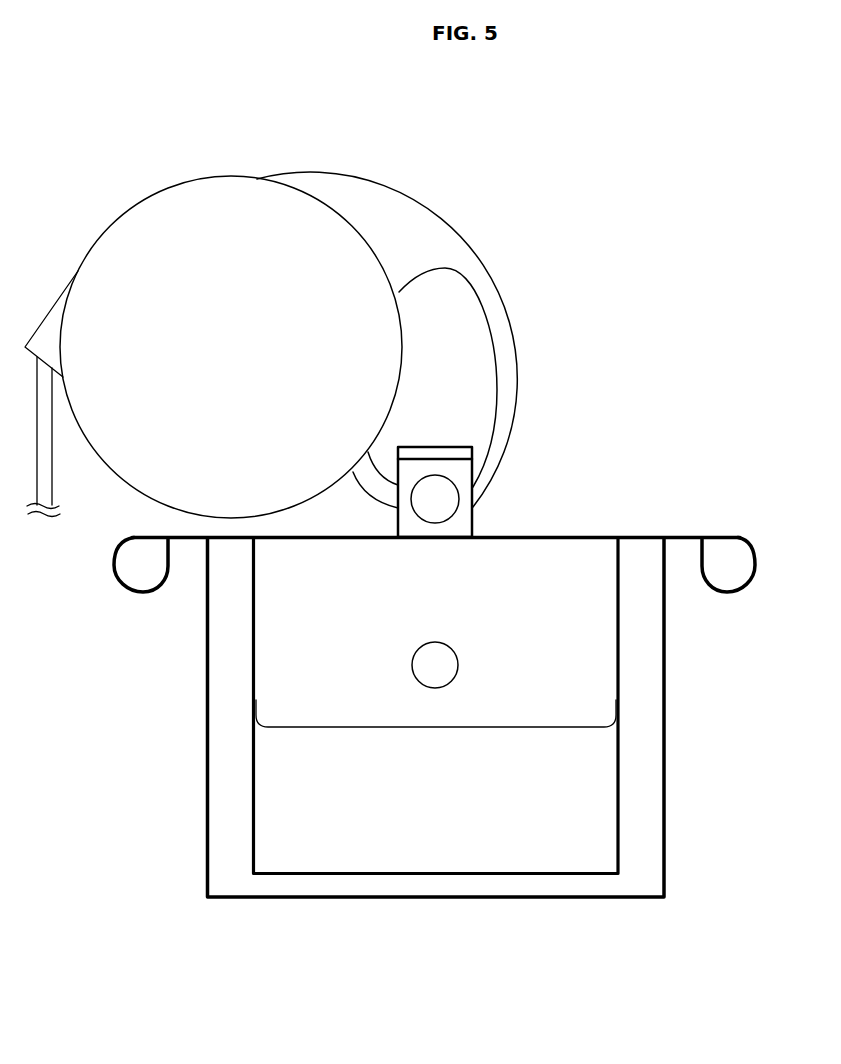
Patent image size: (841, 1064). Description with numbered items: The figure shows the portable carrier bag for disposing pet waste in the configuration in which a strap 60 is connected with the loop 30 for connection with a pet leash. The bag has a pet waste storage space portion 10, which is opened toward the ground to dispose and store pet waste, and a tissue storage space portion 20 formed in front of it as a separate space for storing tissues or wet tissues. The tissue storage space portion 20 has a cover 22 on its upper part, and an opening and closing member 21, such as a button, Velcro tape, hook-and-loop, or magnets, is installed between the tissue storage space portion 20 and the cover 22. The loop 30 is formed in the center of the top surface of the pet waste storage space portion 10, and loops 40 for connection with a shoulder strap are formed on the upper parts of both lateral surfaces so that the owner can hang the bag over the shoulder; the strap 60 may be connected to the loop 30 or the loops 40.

The pet waste storage space portion 10 is at (638, 855).
The tissue storage space portion 20 is at (513, 847).
The opening and closing member 21 is at (459, 668).
The cover 22 is at (585, 628).
The loop for connection with a pet leash 30 is at (467, 513).
The loop for connection with a shoulder strap 40 is at (113, 563).
The strap 60 is at (517, 373).